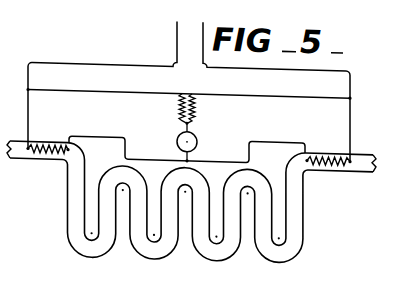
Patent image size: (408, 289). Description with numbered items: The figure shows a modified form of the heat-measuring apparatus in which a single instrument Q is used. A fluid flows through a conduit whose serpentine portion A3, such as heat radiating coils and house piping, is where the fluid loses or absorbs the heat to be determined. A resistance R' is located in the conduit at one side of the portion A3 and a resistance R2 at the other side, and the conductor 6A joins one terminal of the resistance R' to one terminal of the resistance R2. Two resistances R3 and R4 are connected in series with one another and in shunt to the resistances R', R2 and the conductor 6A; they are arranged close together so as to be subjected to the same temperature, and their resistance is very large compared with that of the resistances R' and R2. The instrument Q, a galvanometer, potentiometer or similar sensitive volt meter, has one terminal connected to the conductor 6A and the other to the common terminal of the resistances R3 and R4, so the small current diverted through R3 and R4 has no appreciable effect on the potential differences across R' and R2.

The resistance R' is at (47, 128).
The resistance R2 is at (321, 152).
The resistance R3 is at (179, 114).
The resistance R4 is at (196, 109).
The instrument Q is at (177, 140).
The conductor 6A is at (217, 158).
The portion of the conduit A3 is at (259, 170).